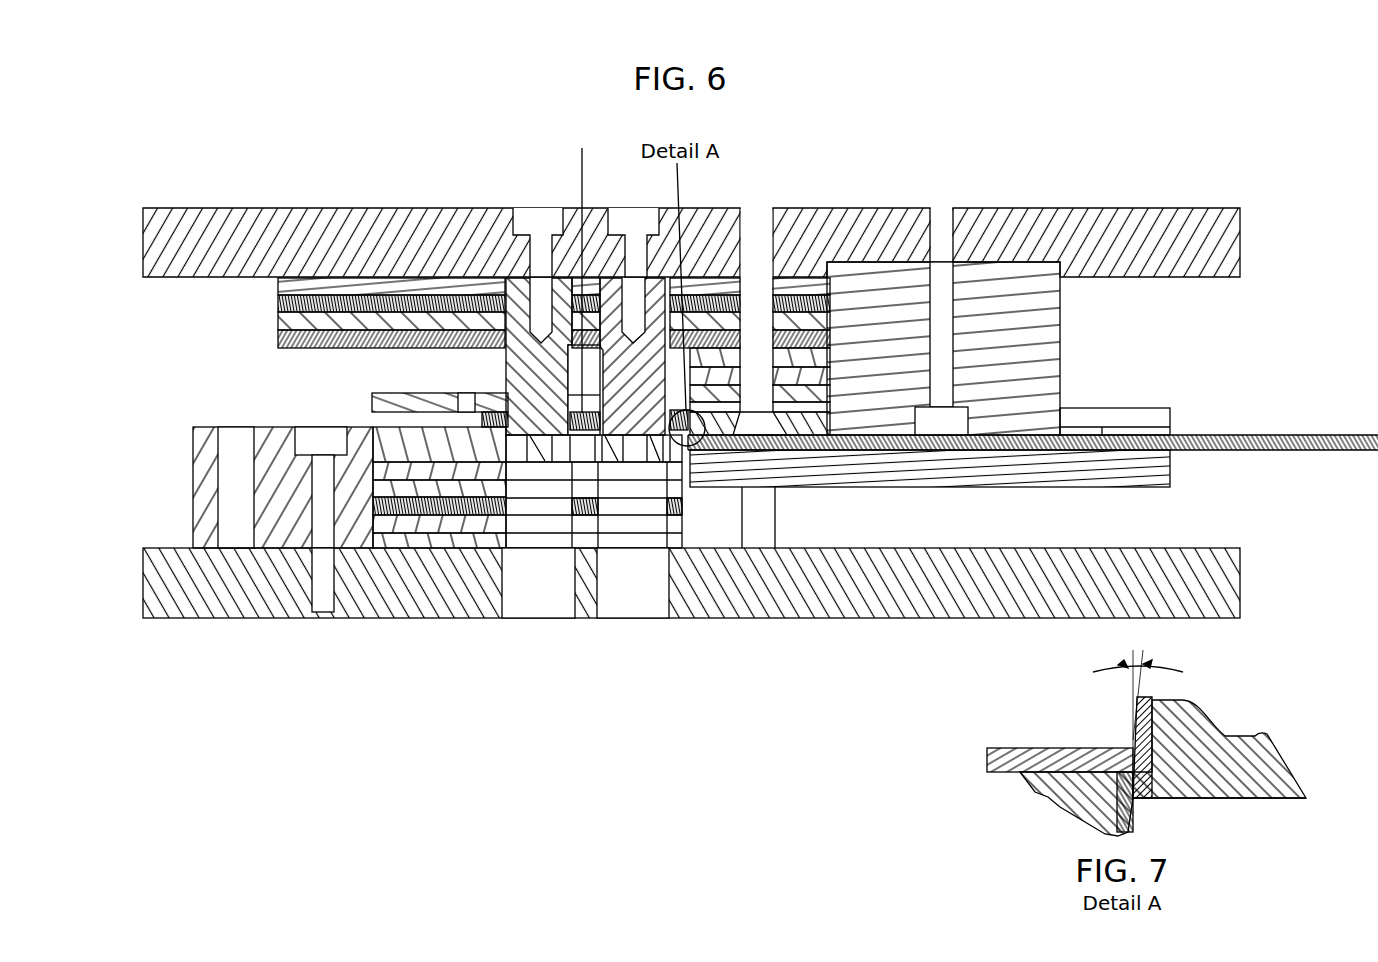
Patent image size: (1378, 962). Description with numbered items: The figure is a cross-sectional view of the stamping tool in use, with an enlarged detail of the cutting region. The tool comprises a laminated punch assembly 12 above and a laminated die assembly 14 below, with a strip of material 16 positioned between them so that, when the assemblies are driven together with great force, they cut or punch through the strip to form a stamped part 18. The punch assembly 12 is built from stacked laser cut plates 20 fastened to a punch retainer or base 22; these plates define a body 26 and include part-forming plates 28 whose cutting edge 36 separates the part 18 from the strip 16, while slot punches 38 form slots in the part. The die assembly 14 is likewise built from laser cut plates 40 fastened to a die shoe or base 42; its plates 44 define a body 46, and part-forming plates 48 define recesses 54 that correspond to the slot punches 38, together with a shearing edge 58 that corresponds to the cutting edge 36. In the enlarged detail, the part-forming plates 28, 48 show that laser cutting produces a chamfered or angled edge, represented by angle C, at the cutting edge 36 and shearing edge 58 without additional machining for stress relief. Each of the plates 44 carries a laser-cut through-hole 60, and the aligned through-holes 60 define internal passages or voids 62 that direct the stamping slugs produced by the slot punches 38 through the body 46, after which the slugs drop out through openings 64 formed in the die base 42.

In FIG. 6, the laminated punch assembly 12 is at (288, 155).
In FIG. 6, the laminated die assembly 14 is at (237, 700).
In FIG. 6, the strip of material 16 is at (1270, 435).
In FIG. 6, the stamped part 18 is at (582, 268).
In FIG. 7, the stamped part 18 is at (1025, 760).
In FIG. 7, the laser cut plates 20 is at (1228, 750).
In FIG. 6, the punch retainer or base 22 is at (447, 208).
In FIG. 6, the body 26 is at (270, 315).
In FIG. 7, the part-forming plates 28 is at (1272, 800).
In FIG. 7, the cutting edge 36 is at (1143, 722).
In FIG. 6, the slot punches 38 is at (506, 373).
In FIG. 7, the laser cut plates 40 is at (1095, 836).
In FIG. 6, the die shoe or base 42 is at (691, 624).
In FIG. 6, the plates 44 is at (453, 522).
In FIG. 6, the body 46 is at (697, 501).
In FIG. 7, the part-forming plates 48 is at (1058, 790).
In FIG. 6, the recesses 54 is at (540, 447).
In FIG. 7, the shearing edge 58 is at (1131, 812).
In FIG. 6, the through-holes 60 is at (586, 495).
In FIG. 6, the internal passages or voids 62 is at (583, 607).
In FIG. 6, the openings 64 is at (619, 605).